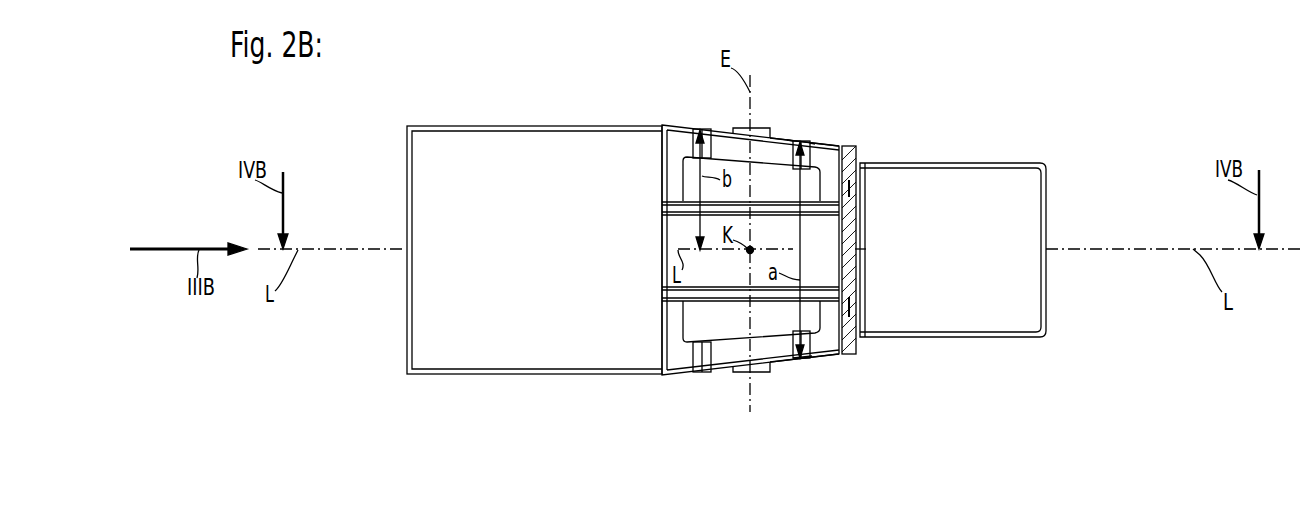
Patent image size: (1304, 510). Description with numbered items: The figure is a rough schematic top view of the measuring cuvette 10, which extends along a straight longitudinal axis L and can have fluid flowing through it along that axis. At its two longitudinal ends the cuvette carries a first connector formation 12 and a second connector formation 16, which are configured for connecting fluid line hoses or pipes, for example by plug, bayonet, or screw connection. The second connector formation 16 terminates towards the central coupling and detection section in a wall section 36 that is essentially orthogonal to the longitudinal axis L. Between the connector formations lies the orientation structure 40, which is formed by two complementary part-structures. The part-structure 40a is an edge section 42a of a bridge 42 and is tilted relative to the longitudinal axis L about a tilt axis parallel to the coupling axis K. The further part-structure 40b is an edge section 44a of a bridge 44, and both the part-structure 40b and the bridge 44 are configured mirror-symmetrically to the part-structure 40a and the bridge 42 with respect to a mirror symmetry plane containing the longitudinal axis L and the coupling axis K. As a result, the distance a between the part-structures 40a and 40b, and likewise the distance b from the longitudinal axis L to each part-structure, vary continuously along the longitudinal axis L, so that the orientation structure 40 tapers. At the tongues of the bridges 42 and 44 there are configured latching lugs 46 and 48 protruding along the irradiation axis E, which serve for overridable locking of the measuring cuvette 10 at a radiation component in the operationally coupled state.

The measuring cuvette 10 is at (449, 73).
The first connector formation 12 is at (551, 148).
The second connector formation 16 is at (972, 185).
The wall section 36 is at (848, 150).
The orientation structure 40 is at (702, 388).
The part-structure 40a is at (817, 360).
The part-structure 40b is at (787, 140).
The bridge 42 is at (777, 352).
The edge section 42a is at (817, 360).
The bridge 44 is at (717, 148).
The edge section 44a is at (787, 140).
The latching lug 46 is at (757, 367).
The latching lug 48 is at (749, 132).